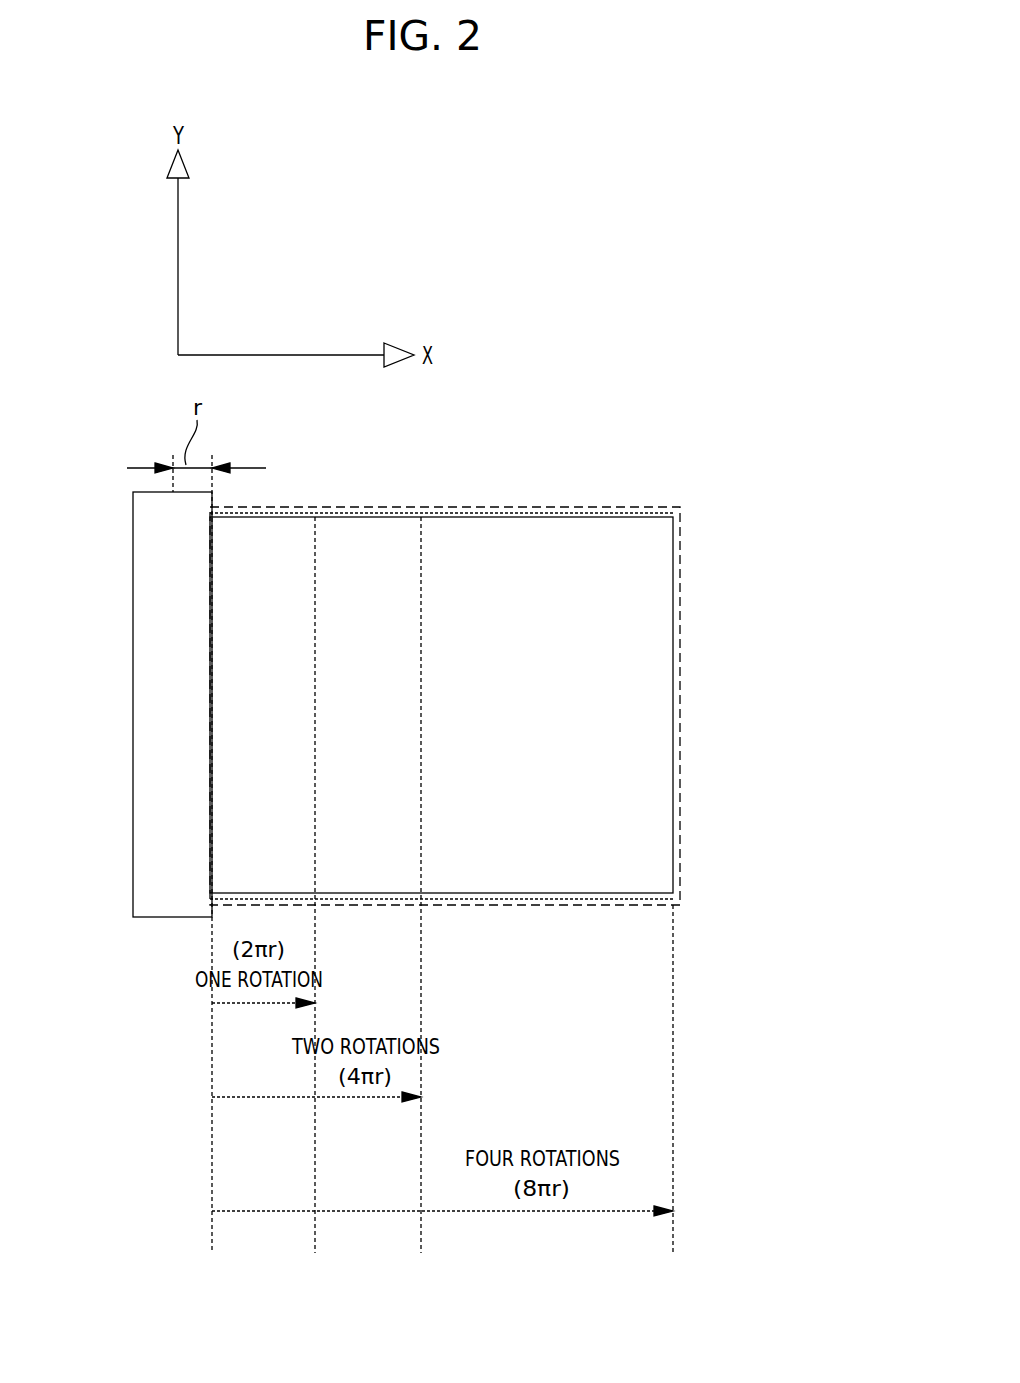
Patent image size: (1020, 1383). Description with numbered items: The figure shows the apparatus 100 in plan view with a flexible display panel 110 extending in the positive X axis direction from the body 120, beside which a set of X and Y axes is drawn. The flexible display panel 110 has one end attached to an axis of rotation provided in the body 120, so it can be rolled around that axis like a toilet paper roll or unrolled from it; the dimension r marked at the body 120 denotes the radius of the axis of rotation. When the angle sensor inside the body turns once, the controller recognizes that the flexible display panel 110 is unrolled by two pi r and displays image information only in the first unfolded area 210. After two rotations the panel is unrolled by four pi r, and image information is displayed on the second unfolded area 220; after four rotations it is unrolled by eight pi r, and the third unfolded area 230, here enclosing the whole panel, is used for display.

The apparatus 100 is at (638, 475).
The flexible display panel 110 is at (655, 750).
The body 120 is at (143, 588).
The first unfolded area 210 is at (315, 552).
The second unfolded area 220 is at (421, 552).
The third unfolded area 230 is at (680, 580).